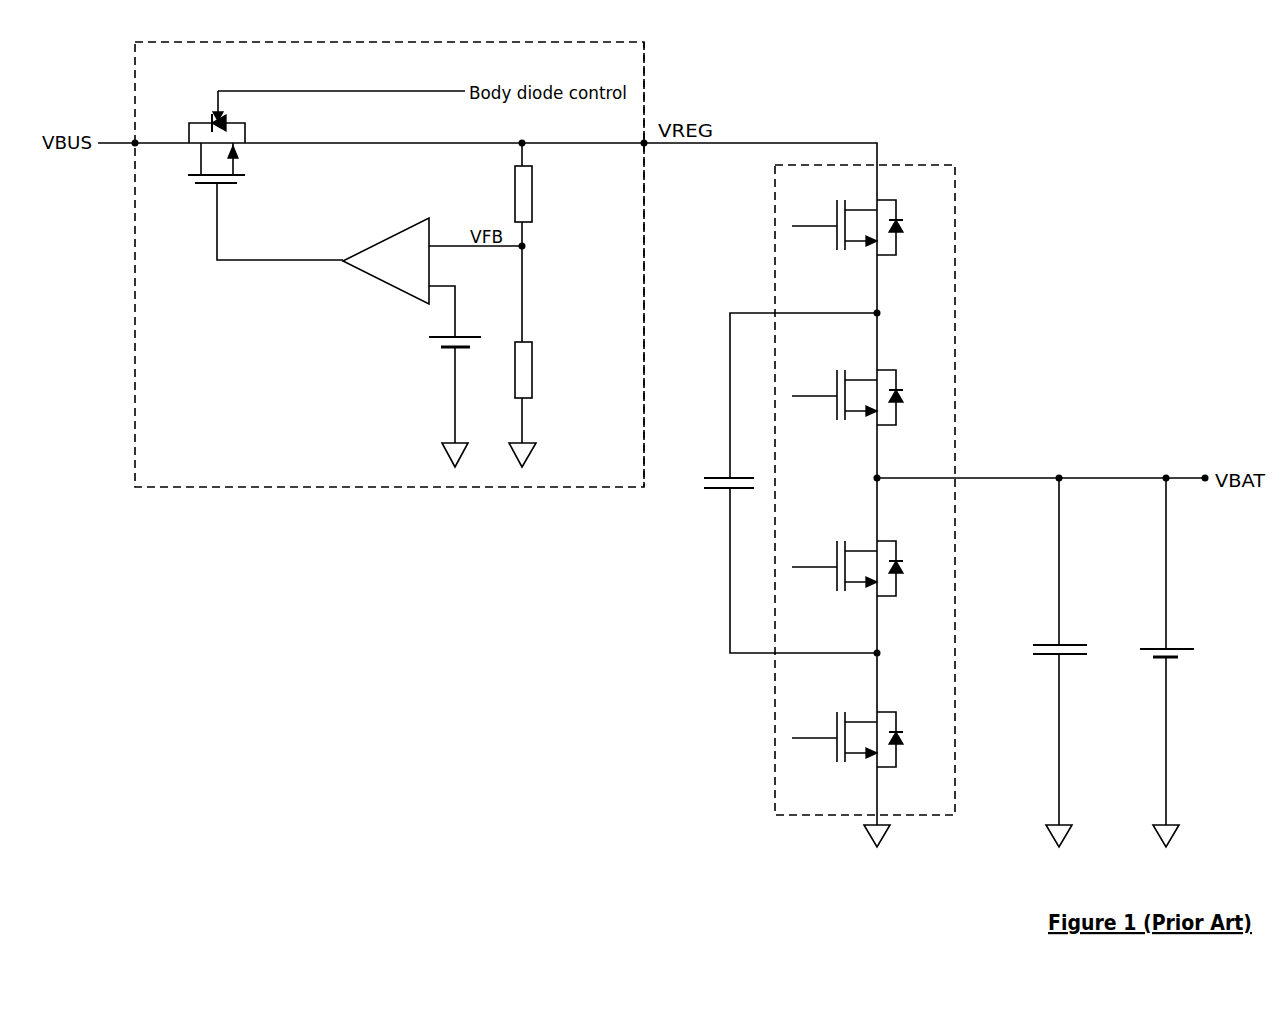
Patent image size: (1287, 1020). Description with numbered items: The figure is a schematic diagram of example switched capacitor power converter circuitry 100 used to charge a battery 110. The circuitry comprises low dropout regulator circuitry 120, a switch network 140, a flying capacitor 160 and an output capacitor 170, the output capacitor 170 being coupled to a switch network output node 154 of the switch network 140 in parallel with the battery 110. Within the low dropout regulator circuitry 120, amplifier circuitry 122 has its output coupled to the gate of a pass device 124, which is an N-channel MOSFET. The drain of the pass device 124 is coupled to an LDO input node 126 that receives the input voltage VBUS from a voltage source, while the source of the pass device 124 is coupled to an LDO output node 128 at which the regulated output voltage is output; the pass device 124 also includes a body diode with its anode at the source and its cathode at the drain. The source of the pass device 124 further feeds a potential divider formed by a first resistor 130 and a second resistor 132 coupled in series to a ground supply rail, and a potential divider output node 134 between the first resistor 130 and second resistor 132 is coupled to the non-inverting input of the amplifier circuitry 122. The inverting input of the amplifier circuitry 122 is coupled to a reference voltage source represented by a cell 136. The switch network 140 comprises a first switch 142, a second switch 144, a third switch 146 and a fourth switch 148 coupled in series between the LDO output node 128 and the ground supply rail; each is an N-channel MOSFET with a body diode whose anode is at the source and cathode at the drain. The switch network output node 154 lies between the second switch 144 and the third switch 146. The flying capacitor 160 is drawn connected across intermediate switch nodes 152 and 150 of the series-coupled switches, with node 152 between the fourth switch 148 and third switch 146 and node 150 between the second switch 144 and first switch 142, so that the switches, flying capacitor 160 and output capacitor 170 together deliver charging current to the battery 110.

The switched capacitor power converter circuitry 100 is at (972, 114).
The battery 110 is at (1170, 659).
The low dropout regulator (LDO) circuitry 120 is at (389, 264).
The amplifier circuitry 122 is at (432, 277).
The pass device 124 is at (220, 185).
The LDO input node 126 is at (137, 146).
The LDO output node 128 is at (642, 147).
The first resistor 130 is at (528, 218).
The second resistor 132 is at (528, 395).
The potential divider output node 134 is at (521, 250).
The cell 136 is at (435, 340).
The switch network 140 is at (865, 490).
The first switch 142 is at (860, 755).
The second switch 144 is at (860, 584).
The third switch 146 is at (860, 413).
The fourth switch 148 is at (860, 243).
The switch node 150 is at (880, 656).
The switch node 152 is at (880, 315).
The switch network output node 154 is at (880, 481).
The flying capacitor 160 is at (722, 490).
The output capacitor 170 is at (1070, 656).